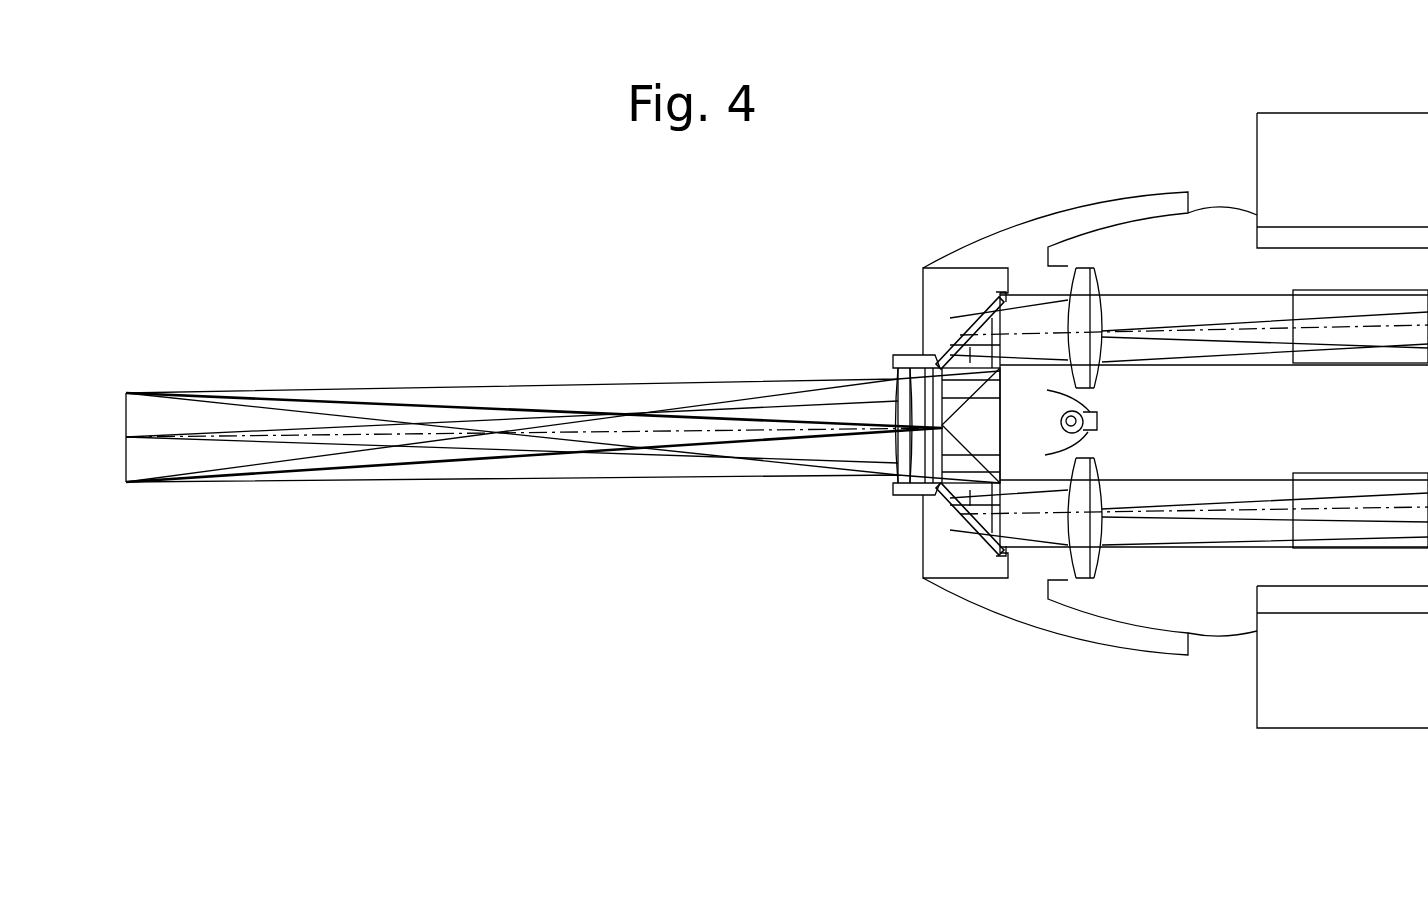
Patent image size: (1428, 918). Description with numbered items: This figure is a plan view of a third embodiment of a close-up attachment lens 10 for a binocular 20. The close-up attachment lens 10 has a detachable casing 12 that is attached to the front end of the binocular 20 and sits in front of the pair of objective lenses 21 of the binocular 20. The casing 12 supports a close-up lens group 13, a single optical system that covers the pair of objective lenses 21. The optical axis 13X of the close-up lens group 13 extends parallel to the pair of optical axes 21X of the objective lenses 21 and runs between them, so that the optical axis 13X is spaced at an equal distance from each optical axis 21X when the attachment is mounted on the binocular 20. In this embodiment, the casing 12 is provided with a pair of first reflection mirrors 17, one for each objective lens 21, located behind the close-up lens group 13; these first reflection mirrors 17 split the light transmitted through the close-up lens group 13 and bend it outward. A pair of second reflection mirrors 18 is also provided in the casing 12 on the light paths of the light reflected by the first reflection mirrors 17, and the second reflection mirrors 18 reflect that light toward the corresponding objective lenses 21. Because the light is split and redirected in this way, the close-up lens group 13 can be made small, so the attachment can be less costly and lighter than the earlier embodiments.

The close-up attachment lens 10 is at (1047, 208).
The casing 12 is at (983, 247).
The close-up lens group 13 is at (912, 468).
The optical axis of the close-up lens group 13X is at (373, 437).
The first reflection mirrors 17 is at (893, 355).
The second reflection mirrors 18 is at (967, 338).
The binocular 20 is at (1223, 209).
The objective lenses 21 is at (1102, 279).
The optical axes of the objective lenses 21X is at (1037, 337).